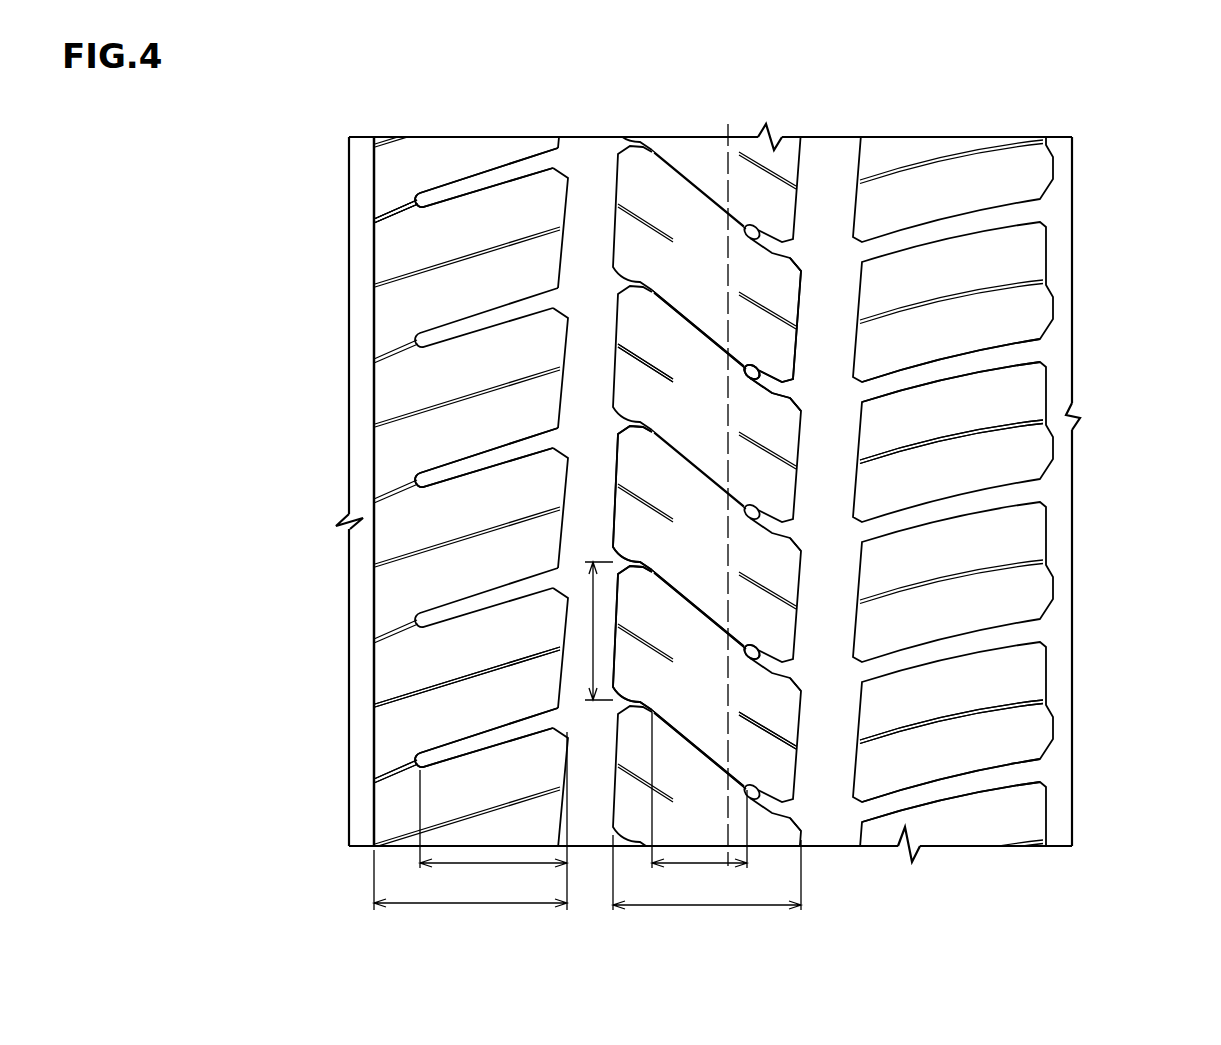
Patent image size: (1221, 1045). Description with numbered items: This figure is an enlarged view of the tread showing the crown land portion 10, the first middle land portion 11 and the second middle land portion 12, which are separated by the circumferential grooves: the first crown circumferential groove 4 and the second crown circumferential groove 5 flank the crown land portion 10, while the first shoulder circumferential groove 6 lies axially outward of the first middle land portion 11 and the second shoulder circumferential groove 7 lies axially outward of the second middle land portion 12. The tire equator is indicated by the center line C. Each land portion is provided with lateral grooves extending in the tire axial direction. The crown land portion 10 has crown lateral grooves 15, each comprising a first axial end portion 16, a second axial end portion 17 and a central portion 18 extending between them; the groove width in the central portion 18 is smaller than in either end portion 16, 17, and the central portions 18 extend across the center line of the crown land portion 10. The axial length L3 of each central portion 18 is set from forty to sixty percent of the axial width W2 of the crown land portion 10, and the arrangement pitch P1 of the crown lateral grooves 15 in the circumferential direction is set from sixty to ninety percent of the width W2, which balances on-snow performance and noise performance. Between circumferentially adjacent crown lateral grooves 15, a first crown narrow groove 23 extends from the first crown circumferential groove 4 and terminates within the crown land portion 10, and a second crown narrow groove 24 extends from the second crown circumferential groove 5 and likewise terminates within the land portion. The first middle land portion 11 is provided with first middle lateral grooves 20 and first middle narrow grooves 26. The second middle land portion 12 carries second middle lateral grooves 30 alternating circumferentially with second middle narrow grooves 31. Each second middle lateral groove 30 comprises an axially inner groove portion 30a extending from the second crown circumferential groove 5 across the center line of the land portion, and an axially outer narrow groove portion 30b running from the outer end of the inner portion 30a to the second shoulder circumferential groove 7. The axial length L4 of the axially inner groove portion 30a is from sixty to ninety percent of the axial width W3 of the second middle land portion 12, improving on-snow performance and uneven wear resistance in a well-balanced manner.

The first crown circumferential groove 4 is at (827, 176).
The second crown circumferential groove 5 is at (596, 192).
The first shoulder circumferential groove 6 is at (1063, 172).
The second shoulder circumferential groove 7 is at (362, 172).
The crown land portion 10 is at (684, 215).
The first middle land portion 11 is at (932, 195).
The second middle land portion 12 is at (460, 222).
The crown lateral groove 15 is at (678, 316).
The first axial end portion 16 is at (763, 378).
The second axial end portion 17 is at (632, 424).
The central portion 18 is at (693, 606).
The first middle lateral groove 20 is at (962, 361).
The first crown narrow groove 23 is at (767, 731).
The second crown narrow groove 24 is at (673, 377).
The first middle narrow groove 26 is at (980, 422).
The second middle lateral groove 30 is at (486, 186).
The axially inner groove portion 30a is at (468, 469).
The axially outer narrow groove portion 30b is at (394, 214).
The second middle narrow groove 31 is at (462, 676).
The tire equator C is at (729, 481).
The arrangement pitch P1 is at (593, 628).
The axial length of central portion L3 is at (699, 804).
The axial length of axially inner groove portion L4 is at (493, 821).
The axial width of crown land portion W2 is at (707, 885).
The axial width of second middle land portion W3 is at (470, 893).